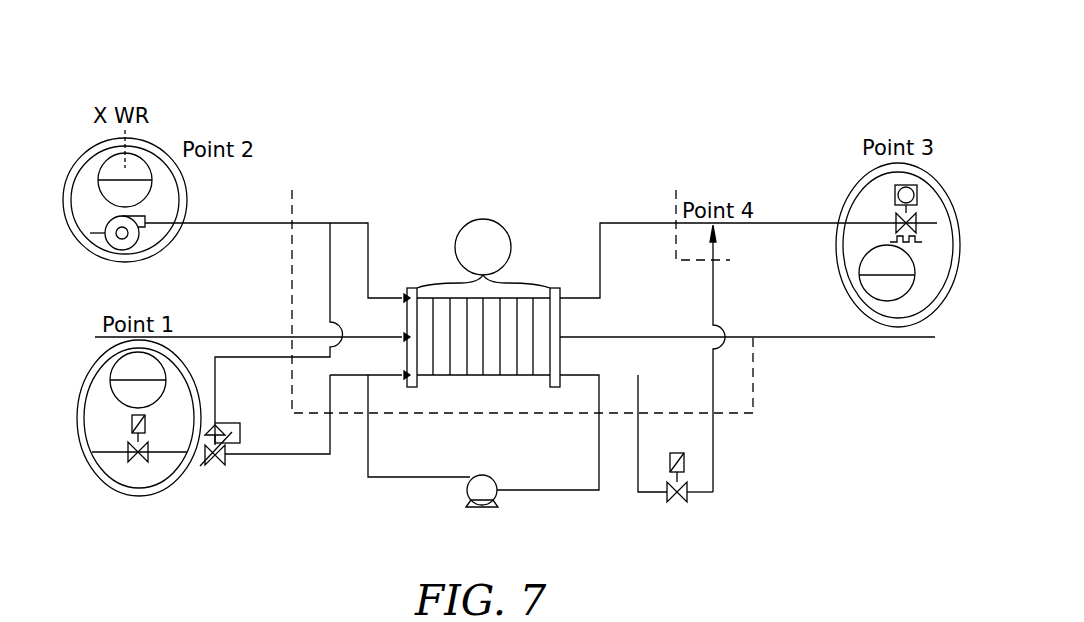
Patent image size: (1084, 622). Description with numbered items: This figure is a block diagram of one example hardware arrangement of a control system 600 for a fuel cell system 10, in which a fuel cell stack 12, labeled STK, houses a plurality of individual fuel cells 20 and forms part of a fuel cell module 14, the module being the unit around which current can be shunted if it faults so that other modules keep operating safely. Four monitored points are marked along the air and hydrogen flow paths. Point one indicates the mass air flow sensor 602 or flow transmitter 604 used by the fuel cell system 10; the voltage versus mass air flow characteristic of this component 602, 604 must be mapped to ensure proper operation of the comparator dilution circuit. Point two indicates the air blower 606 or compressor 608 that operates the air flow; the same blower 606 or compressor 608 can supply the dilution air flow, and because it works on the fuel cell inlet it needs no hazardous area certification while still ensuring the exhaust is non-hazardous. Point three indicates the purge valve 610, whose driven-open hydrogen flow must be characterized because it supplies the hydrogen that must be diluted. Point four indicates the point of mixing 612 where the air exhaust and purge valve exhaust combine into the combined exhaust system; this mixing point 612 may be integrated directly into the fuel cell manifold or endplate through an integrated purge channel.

The fuel cell system 10 is at (727, 118).
The control system 600 is at (770, 155).
The fuel cell stack 12 is at (483, 218).
The fuel cell module 14 is at (412, 273).
The fuel cell 20 is at (547, 284).
The mass air flow sensor 602 is at (110, 443).
The flow transmitter 604 is at (122, 432).
The air blower 606 is at (98, 219).
The compressor 608 is at (97, 237).
The purge valve 610 is at (917, 227).
The point of mixing 612 is at (716, 228).